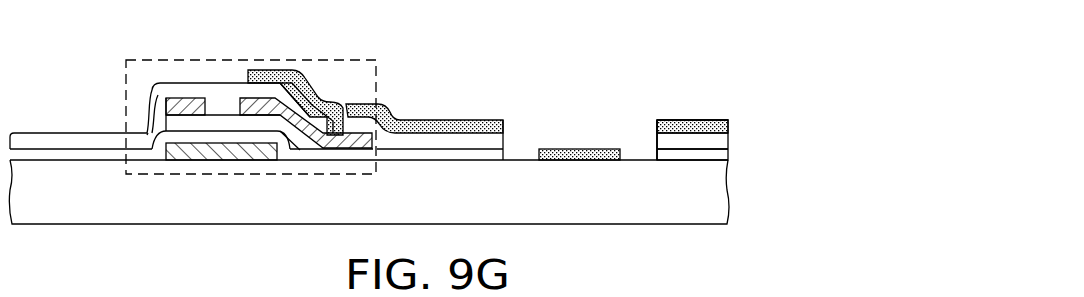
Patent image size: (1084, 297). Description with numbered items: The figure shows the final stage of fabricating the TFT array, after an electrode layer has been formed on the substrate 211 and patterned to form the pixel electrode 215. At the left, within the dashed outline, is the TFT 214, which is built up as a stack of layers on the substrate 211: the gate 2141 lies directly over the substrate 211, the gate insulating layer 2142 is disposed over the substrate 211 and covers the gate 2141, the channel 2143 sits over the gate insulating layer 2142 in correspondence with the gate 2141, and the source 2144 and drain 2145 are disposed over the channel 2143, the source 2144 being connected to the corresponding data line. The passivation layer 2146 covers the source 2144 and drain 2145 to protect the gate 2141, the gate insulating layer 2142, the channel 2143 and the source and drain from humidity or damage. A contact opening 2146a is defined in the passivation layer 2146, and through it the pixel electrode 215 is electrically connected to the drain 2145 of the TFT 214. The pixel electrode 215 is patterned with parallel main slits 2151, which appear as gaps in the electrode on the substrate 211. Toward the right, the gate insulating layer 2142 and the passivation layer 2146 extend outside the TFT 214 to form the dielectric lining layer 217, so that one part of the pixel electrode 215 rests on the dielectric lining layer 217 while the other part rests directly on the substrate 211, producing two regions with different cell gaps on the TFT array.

The substrate 211 is at (728, 190).
The TFT 214 is at (237, 178).
The gate 2141 is at (148, 133).
The gate insulating layer 2142 is at (728, 148).
The channel 2143 is at (150, 102).
The source 2144 is at (156, 96).
The drain 2145 is at (285, 85).
The contact opening 2146a is at (346, 107).
The passivation layer 2146 is at (728, 128).
The main slits 2151 is at (638, 172).
The pixel electrode 215 is at (658, 122).
The dielectric lining layer 217 is at (826, 110).